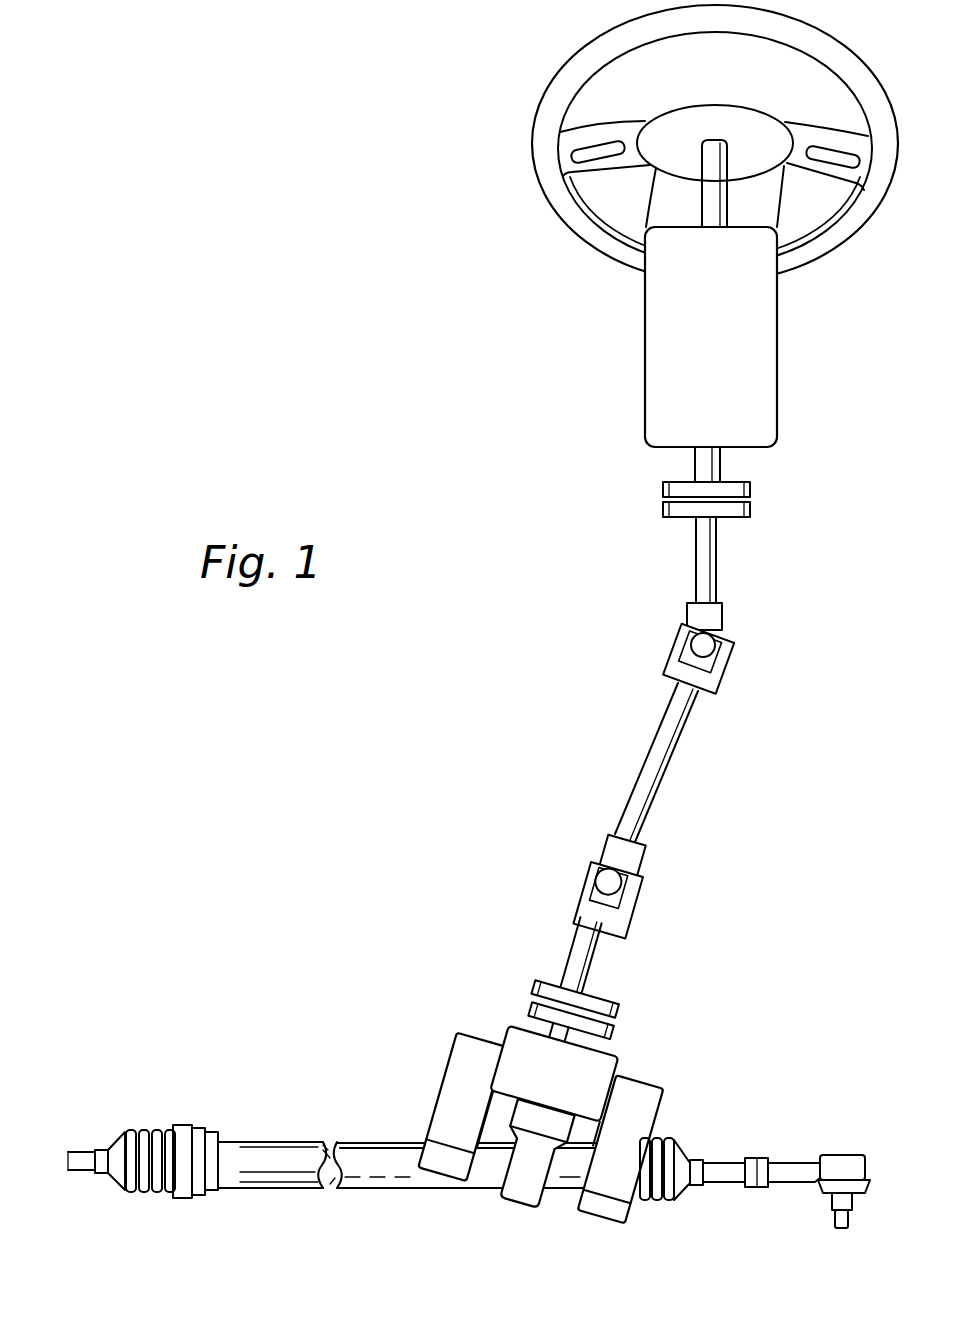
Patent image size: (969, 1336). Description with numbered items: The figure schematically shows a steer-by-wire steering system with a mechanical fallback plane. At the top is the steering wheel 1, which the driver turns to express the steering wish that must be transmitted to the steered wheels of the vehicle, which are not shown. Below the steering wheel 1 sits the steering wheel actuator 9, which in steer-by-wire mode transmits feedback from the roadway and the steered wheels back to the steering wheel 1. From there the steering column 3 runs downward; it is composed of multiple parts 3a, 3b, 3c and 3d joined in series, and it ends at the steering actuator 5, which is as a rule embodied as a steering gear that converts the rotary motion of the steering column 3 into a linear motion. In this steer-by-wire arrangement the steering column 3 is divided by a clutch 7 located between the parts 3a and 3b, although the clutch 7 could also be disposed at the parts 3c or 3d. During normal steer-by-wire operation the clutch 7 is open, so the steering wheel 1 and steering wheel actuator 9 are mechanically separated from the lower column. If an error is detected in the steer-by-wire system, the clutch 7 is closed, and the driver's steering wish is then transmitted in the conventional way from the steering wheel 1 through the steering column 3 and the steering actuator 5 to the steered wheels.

The steering wheel 1 is at (540, 115).
The steering column 3 is at (688, 748).
The steering column part 3a is at (708, 471).
The steering column part 3b is at (704, 563).
The steering column part 3c is at (655, 797).
The steering column part 3d is at (580, 963).
The steering actuator 5 is at (447, 1032).
The clutch 7 is at (658, 497).
The steering wheel actuator 9 is at (660, 331).